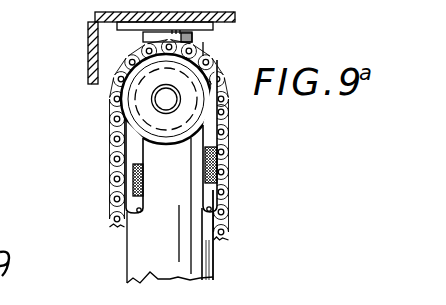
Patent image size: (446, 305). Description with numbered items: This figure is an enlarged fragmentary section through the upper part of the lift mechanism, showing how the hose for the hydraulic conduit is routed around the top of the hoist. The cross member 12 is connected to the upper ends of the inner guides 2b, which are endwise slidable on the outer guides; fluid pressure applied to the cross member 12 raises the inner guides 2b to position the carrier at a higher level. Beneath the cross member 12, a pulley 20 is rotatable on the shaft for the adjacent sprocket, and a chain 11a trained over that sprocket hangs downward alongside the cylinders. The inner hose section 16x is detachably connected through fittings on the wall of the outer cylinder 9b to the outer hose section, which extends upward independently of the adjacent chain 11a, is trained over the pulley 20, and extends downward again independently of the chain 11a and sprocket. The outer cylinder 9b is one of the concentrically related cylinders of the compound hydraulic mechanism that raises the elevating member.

The inner guides 2b is at (88, 57).
The cross member 12 is at (235, 22).
The pulley 20 is at (197, 118).
The inner hose section 16x is at (143, 160).
The chains 11a is at (225, 213).
The outer cylinder 9b is at (205, 260).